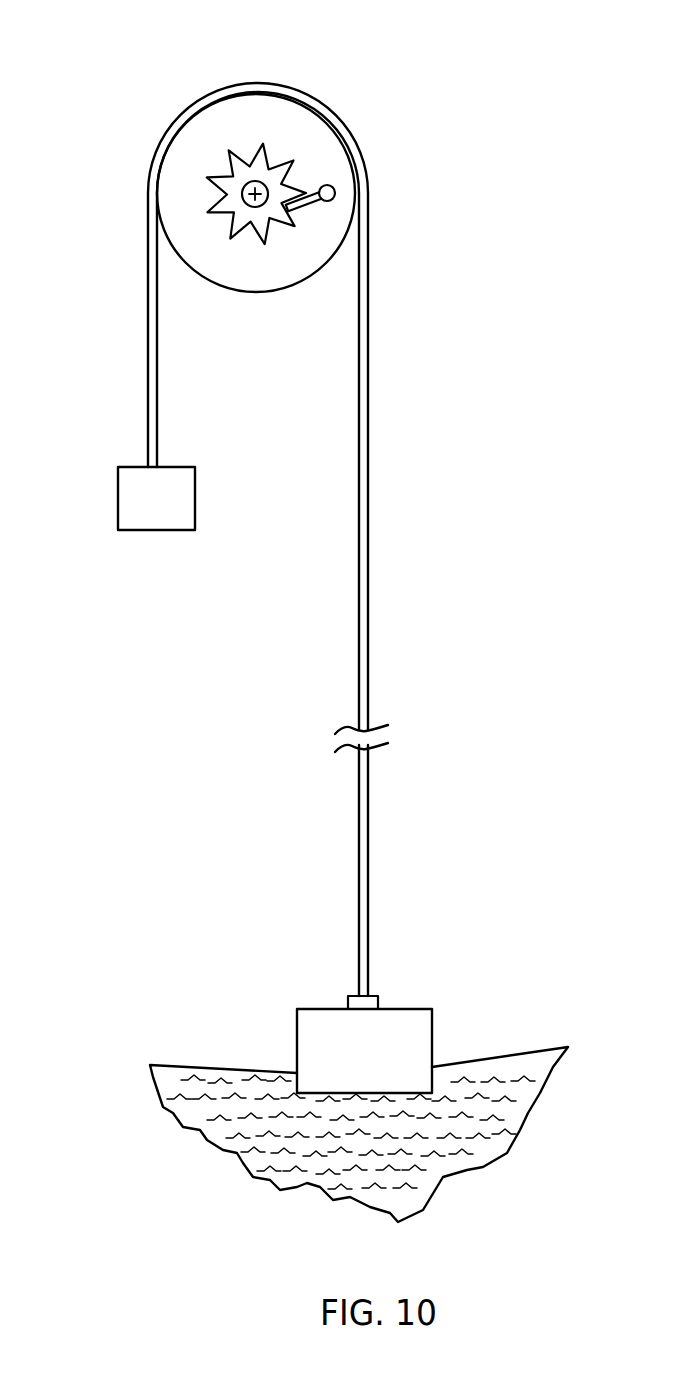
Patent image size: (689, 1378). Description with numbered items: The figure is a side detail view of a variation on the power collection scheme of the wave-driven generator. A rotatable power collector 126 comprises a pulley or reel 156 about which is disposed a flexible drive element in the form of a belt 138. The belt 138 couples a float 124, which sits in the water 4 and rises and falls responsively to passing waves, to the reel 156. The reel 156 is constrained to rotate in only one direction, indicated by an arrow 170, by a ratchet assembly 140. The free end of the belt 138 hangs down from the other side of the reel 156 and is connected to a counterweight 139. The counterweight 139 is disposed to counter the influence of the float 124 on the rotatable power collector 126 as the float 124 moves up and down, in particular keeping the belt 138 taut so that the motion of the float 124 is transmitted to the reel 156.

The body of water 4 is at (503, 995).
The float 124 is at (380, 1059).
The rotatable power collector 126 is at (353, 68).
The belt 138 is at (370, 397).
The counterweight 139 is at (118, 478).
The ratchet assembly 140 is at (277, 310).
The pulley or reel 156 is at (252, 137).
The arrow 170 is at (236, 77).